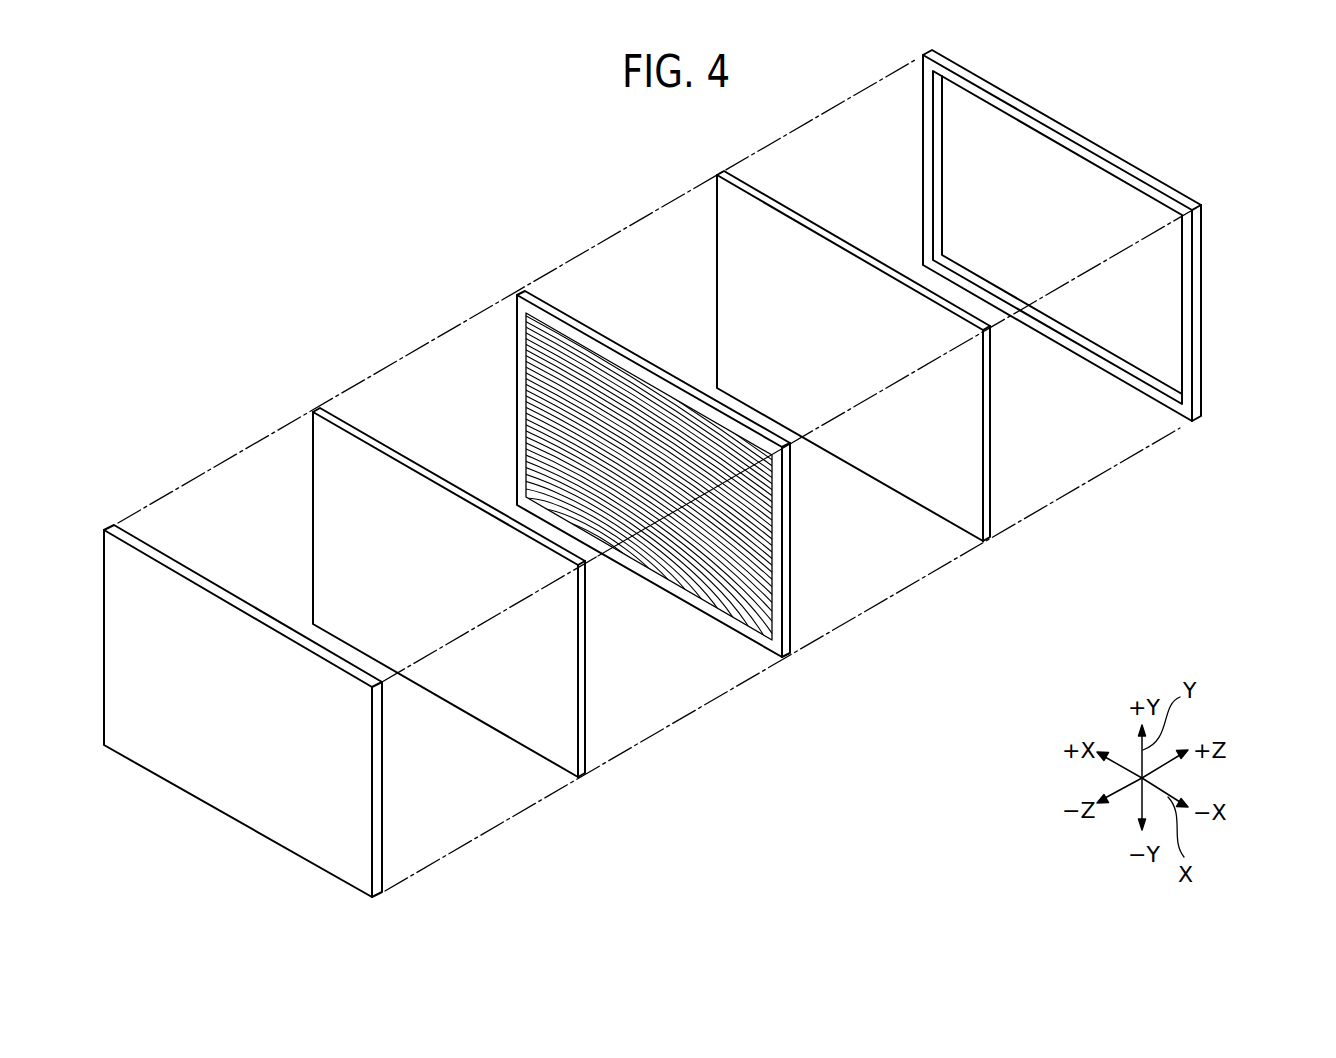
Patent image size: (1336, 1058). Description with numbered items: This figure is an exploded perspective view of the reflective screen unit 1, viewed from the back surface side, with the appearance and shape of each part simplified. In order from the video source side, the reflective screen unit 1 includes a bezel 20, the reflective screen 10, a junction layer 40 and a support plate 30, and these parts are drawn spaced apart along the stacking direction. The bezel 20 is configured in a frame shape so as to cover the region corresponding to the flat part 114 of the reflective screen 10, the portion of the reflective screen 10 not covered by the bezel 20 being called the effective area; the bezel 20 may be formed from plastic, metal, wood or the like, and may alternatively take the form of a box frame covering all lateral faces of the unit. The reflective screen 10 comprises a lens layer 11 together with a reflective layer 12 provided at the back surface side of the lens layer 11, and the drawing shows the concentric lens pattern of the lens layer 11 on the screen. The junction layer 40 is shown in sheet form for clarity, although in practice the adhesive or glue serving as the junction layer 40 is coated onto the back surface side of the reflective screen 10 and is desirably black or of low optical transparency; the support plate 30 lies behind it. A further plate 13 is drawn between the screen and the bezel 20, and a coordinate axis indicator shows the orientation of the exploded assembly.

The reflective screen unit 1 is at (484, 236).
The reflective screen 10 is at (1126, 571).
The lens layer 11 is at (725, 492).
The reflective layer 12 is at (789, 636).
The transparent plate 13 is at (990, 512).
The flat part 114 is at (790, 541).
The bezel 20 is at (1198, 400).
The support plate 30 is at (378, 838).
The junction layer 40 is at (584, 745).